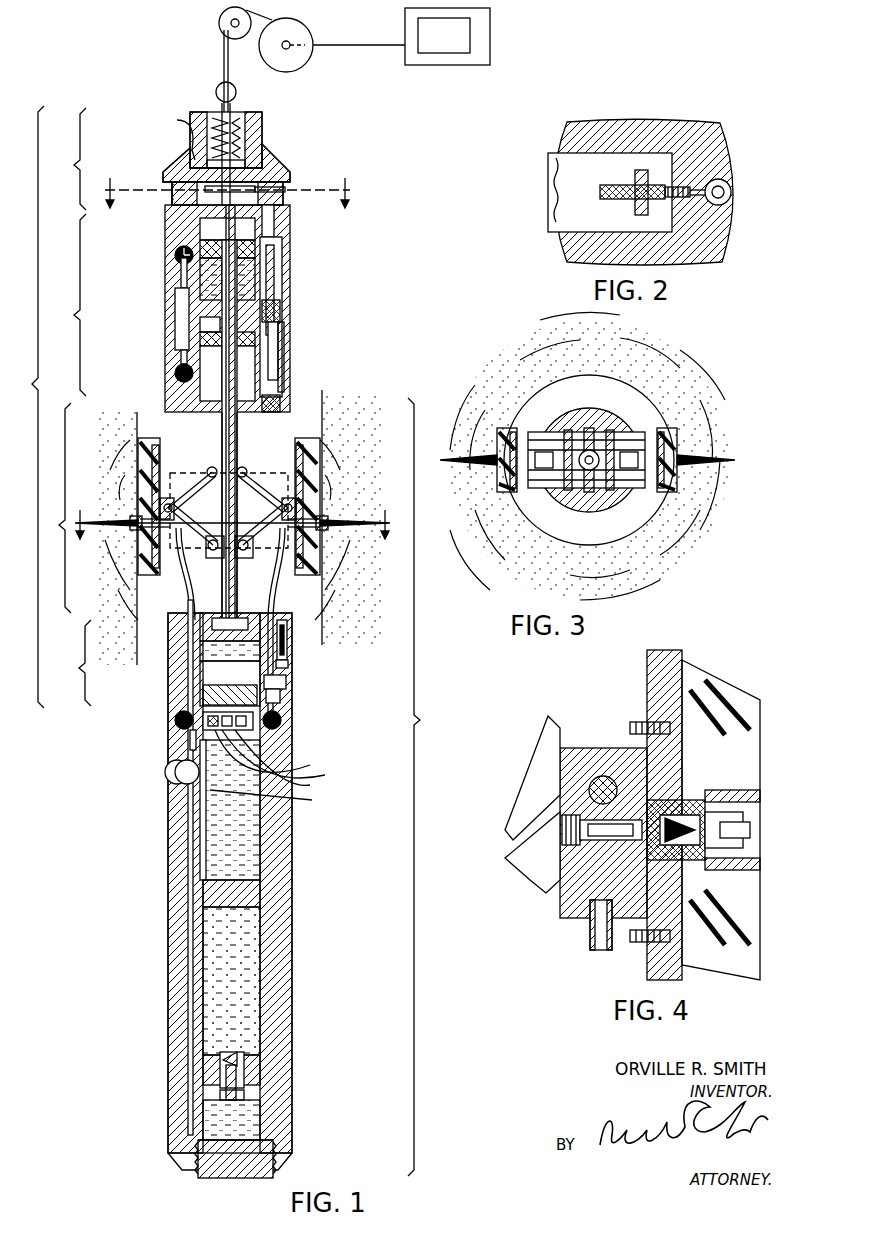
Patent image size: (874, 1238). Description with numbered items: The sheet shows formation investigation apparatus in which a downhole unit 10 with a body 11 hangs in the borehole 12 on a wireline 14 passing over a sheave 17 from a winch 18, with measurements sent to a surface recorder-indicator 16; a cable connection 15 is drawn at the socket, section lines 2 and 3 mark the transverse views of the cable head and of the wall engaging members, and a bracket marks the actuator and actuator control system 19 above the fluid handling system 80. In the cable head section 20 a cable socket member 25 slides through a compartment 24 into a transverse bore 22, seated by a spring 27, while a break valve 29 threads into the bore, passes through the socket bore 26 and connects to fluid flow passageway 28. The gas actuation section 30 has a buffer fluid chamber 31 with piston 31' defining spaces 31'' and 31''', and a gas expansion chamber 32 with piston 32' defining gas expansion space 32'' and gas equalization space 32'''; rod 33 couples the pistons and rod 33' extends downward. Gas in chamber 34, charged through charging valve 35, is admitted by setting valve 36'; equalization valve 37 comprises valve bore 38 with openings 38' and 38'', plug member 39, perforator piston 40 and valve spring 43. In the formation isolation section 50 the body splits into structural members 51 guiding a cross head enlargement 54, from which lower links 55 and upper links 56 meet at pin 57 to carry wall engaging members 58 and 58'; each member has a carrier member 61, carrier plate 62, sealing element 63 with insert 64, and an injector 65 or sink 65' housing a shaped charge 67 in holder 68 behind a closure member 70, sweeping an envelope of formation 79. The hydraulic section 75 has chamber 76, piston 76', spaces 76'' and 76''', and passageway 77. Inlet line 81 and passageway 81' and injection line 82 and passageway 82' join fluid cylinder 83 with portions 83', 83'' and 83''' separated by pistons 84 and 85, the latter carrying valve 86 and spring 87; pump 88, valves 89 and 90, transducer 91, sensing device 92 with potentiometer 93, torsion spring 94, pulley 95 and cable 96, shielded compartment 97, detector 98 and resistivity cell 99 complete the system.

In FIG. 1, the downhole unit 10 is at (165, 150).
In FIG. 1, the body 11 is at (290, 385).
In FIG. 1, the borehole 12 is at (322, 405).
In FIG. 1, the wireline 14 is at (222, 50).
In FIG. 1, the cable conductor 15 is at (232, 108).
In FIG. 1, the recorder-indicator 16 is at (490, 35).
In FIG. 1, the sheave 17 is at (219, 23).
In FIG. 1, the winch 18 is at (312, 27).
In FIG. 1, the actuator and actuator control system 19 is at (28, 407).
In FIG. 1, the cable head section 20 is at (70, 159).
In FIG. 1, the transversely extending bore 22 is at (172, 195).
In FIG. 2, the transversely extending bore 22 is at (548, 170).
In FIG. 1, the longitudinally extending compartment 24 is at (173, 137).
In FIG. 1, the cable socket member 25 is at (216, 90).
In FIG. 2, the cable socket member 25 is at (633, 184).
In FIG. 2, the transversely extending bore 26 is at (642, 170).
In FIG. 1, the spring 27 is at (240, 135).
In FIG. 1, the fluid flow passageway 28 is at (270, 189).
In FIG. 2, the fluid flow passageway 28 is at (700, 200).
In FIG. 1, the break valve 29 is at (250, 188).
In FIG. 2, the break valve 29 is at (670, 180).
In FIG. 1, the gas actuation section 30 is at (70, 305).
In FIG. 1, the buffer fluid chamber 31 is at (192, 229).
In FIG. 1, the piston 31' is at (168, 251).
In FIG. 1, the buffer fluid space 31'' is at (191, 279).
In FIG. 1, the space 31''' is at (177, 244).
In FIG. 1, the gas expansion chamber 32 is at (177, 337).
In FIG. 1, the piston 32' is at (190, 369).
In FIG. 1, the gas expansion space 32'' is at (143, 357).
In FIG. 1, the gas equalization space 32''' is at (172, 321).
In FIG. 1, the rod 33 is at (143, 278).
In FIG. 1, the rod 33' is at (264, 521).
In FIG. 1, the chamber 34 is at (178, 300).
In FIG. 1, the charging valve 35 is at (178, 258).
In FIG. 1, the setting valve 36' is at (157, 373).
In FIG. 1, the pilot operated equalization valve 37 is at (342, 346).
In FIG. 1, the valve bore 38 is at (293, 347).
In FIG. 1, the opening 38' is at (291, 405).
In FIG. 1, the opening 38'' is at (293, 305).
In FIG. 1, the plug member 39 is at (284, 345).
In FIG. 1, the diaphragm perforator piston 40 is at (274, 222).
In FIG. 2, the diaphragm perforator piston 40 is at (731, 190).
In FIG. 1, the valve spring 43 is at (274, 272).
In FIG. 1, the formation isolation section 50 is at (55, 508).
In FIG. 1, the structural members 51 is at (246, 440).
In FIG. 3, the structural members 51 is at (608, 408).
In FIG. 1, the cross head enlargement 54 is at (205, 563).
In FIG. 3, the cross head enlargement 54 is at (589, 425).
In FIG. 1, the lower links 55 is at (212, 538).
In FIG. 3, the lower links 55 is at (560, 435).
In FIG. 4, the lower links 55 is at (540, 890).
In FIG. 1, the upper links 56 is at (195, 490).
In FIG. 3, the upper links 56 is at (540, 435).
In FIG. 4, the upper links 56 is at (563, 722).
In FIG. 1, the pin 57 is at (263, 535).
In FIG. 4, the pin 57 is at (590, 796).
In FIG. 1, the first wall engaging member 58 is at (126, 499).
In FIG. 1, the second wall engaging member 58' is at (343, 492).
In FIG. 4, the second wall engaging member 58' is at (748, 820).
In FIG. 4, the jet charge carrier and fluid communication member 61 is at (603, 748).
In FIG. 4, the carrier plate 62 is at (647, 688).
In FIG. 4, the sealing element 63 is at (760, 918).
In FIG. 4, the insert 64 is at (758, 780).
In FIG. 1, the fluid injector 65 is at (122, 505).
In FIG. 3, the fluid injector 65 is at (478, 460).
In FIG. 1, the fluid inlet or sink 65' is at (342, 505).
In FIG. 3, the fluid inlet or sink 65' is at (696, 460).
In FIG. 4, the fluid inlet or sink 65' is at (670, 832).
In FIG. 4, the shaped explosive charge 67 is at (690, 860).
In FIG. 4, the holder 68 is at (680, 860).
In FIG. 4, the closure member 70 is at (740, 810).
In FIG. 1, the hydraulic actuator section 75 is at (73, 663).
In FIG. 1, the chamber 76 is at (201, 683).
In FIG. 1, the piston 76' is at (201, 652).
In FIG. 1, the space 76'' is at (201, 627).
In FIG. 1, the space 76''' is at (198, 695).
In FIG. 1, the fluid passageway 77 is at (224, 438).
In FIG. 1, the envelope of formation 79 is at (355, 596).
In FIG. 3, the envelope of formation 79 is at (700, 362).
In FIG. 1, the fluid handling system 80 is at (424, 787).
In FIG. 1, the inlet line 81 is at (291, 621).
In FIG. 4, the inlet line 81 is at (580, 930).
In FIG. 1, the inlet passageway 81' is at (296, 697).
In FIG. 1, the injection line 82 is at (167, 574).
In FIG. 1, the injection passageway 82' is at (160, 867).
In FIG. 1, the fluid cylinder 83 is at (252, 891).
In FIG. 1, the fluid inlet portion 83' is at (269, 810).
In FIG. 1, the second injection fluid portion 83'' is at (272, 981).
In FIG. 1, the first injection fluid portion 83''' is at (269, 1139).
In FIG. 1, the fluid separator piston 84 is at (258, 882).
In FIG. 1, the second fluid separator piston 85 is at (255, 1060).
In FIG. 1, the valve 86 is at (235, 1055).
In FIG. 1, the spring 87 is at (246, 1090).
In FIG. 1, the pump 88 is at (165, 772).
In FIG. 1, the valve 89 is at (282, 720).
In FIG. 1, the valve 90 is at (174, 720).
In FIG. 1, the differential pressure transducer 91 is at (186, 736).
In FIG. 1, the piston displacement sensing device 92 is at (348, 742).
In FIG. 1, the rotary potentiometer 93 is at (273, 751).
In FIG. 1, the torsion spring unit 94 is at (284, 757).
In FIG. 1, the pulley 95 is at (283, 762).
In FIG. 1, the actuation cable 96 is at (271, 799).
In FIG. 1, the radioactively shielded compartment 97 is at (285, 640).
In FIG. 1, the radioactivity detector unit 98 is at (288, 664).
In FIG. 1, the resistivity cell 99 is at (286, 680).
In FIG. 1, the section line 2— 2 is at (228, 190).
In FIG. 1, the section line 3— 3 is at (233, 515).